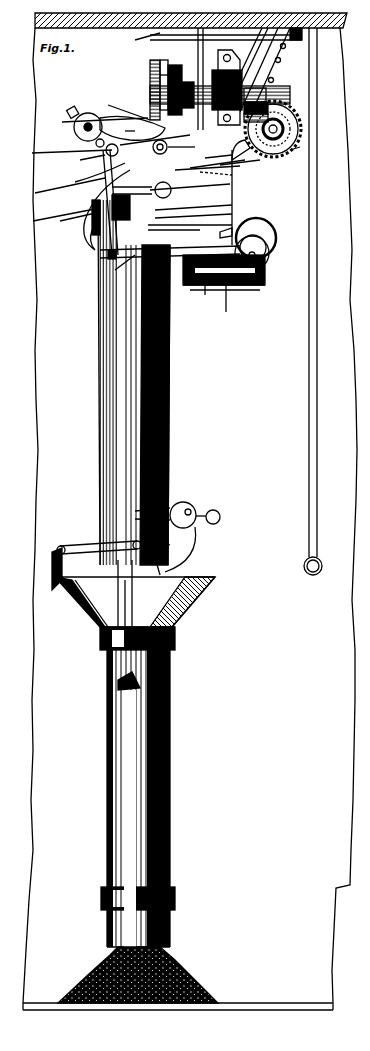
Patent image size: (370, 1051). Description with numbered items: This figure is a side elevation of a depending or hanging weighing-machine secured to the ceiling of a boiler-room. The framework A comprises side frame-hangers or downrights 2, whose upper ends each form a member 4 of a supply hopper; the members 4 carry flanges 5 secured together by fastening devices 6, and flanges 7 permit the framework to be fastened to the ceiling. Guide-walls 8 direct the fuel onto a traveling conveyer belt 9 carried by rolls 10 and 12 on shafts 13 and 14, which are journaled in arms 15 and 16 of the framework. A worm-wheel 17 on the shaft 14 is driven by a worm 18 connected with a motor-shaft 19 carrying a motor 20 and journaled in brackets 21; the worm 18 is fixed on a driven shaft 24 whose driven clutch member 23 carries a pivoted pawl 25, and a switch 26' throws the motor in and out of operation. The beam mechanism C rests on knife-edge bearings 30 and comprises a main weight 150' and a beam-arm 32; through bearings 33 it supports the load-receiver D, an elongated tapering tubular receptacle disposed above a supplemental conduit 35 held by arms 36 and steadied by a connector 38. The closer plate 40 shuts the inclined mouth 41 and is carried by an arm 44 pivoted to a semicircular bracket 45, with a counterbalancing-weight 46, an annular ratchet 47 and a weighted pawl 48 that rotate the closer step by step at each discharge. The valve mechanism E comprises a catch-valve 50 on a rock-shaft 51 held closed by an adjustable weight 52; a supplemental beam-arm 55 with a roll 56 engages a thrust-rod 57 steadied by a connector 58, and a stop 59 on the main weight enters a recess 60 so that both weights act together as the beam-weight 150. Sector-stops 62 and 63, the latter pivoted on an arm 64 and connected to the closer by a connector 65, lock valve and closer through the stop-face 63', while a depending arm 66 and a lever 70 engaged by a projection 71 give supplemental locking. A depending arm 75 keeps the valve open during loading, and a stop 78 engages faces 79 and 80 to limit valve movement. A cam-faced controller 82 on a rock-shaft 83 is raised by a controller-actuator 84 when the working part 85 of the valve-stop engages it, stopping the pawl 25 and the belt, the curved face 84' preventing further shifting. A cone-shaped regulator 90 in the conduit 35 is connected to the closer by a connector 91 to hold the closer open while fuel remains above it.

The side frame-hanger or downright 2 is at (256, 233).
The supply hopper or chute member 4 is at (197, 44).
The flanges 5 is at (267, 70).
The fastening devices 6 is at (270, 66).
The flanges 7 is at (145, 36).
The guide-walls 8 is at (132, 128).
The belt 9 is at (240, 164).
The roll 10 is at (192, 139).
The roll 12 is at (296, 114).
The shaft 13 is at (159, 140).
The shaft 14 is at (282, 129).
The arm 15 is at (134, 130).
The arm 16 is at (241, 192).
The worm-wheel 17 is at (300, 147).
The worm 18 is at (268, 102).
The motor-shaft 19 is at (186, 96).
The motor 20 is at (220, 84).
The brackets or arms 21 is at (266, 88).
The driven clutch member 23 is at (160, 73).
The driven shaft 24 is at (130, 85).
The pivoted pawl 25 is at (160, 75).
The regulating device or switch 26' is at (301, 308).
The bearings 30 is at (170, 252).
The beam-arm 32 is at (222, 305).
The bearings 33 is at (115, 270).
The supplemental conduit 35 is at (170, 757).
The arms 36 is at (52, 564).
The connector 38 is at (85, 546).
The plate 40 is at (135, 597).
The inclined mouth 41 is at (91, 592).
The arm 44 is at (175, 540).
The semicircular bracket 45 is at (165, 508).
The counterbalancing-weight 46 is at (200, 510).
The annular ratchet 47 is at (120, 593).
The pawl 48 is at (185, 555).
The catch-valve 50 is at (81, 161).
The rock-shaft 51 is at (105, 147).
The adjustable weight 52 is at (84, 119).
The supplemental beam-arm 55 is at (204, 297).
The engaging surface or roll 56 is at (108, 256).
The thrust-rod 57 is at (108, 222).
The connector 58 is at (163, 192).
The stop 59 is at (258, 278).
The recess 60 is at (262, 255).
The sector-stop 62 is at (115, 182).
The sector-stop 63 is at (225, 172).
The stop-face 63' is at (215, 164).
The arm 64 is at (232, 205).
The connector 65 is at (160, 351).
The depending arm 66 is at (232, 214).
The shiftable member or lever 70 is at (190, 218).
The projection 71 is at (233, 225).
The depending member or arm 75 is at (54, 218).
The stop 78 is at (60, 154).
The face 79 is at (88, 176).
The face 80 is at (57, 189).
The cam-faced controller 82 is at (168, 105).
The rock-shaft 83 is at (225, 72).
The controller-actuator 84 is at (123, 106).
The curved face 84' is at (95, 122).
The working part 85 is at (166, 142).
The cone-shaped member 90 is at (107, 689).
The connector 91 is at (130, 607).
The beam-weight 150 is at (271, 243).
The main weight 150' is at (276, 263).
The framework A is at (220, 38).
The beam mechanism C is at (207, 283).
The load-receiver D is at (147, 382).
The valve mechanism E is at (47, 172).